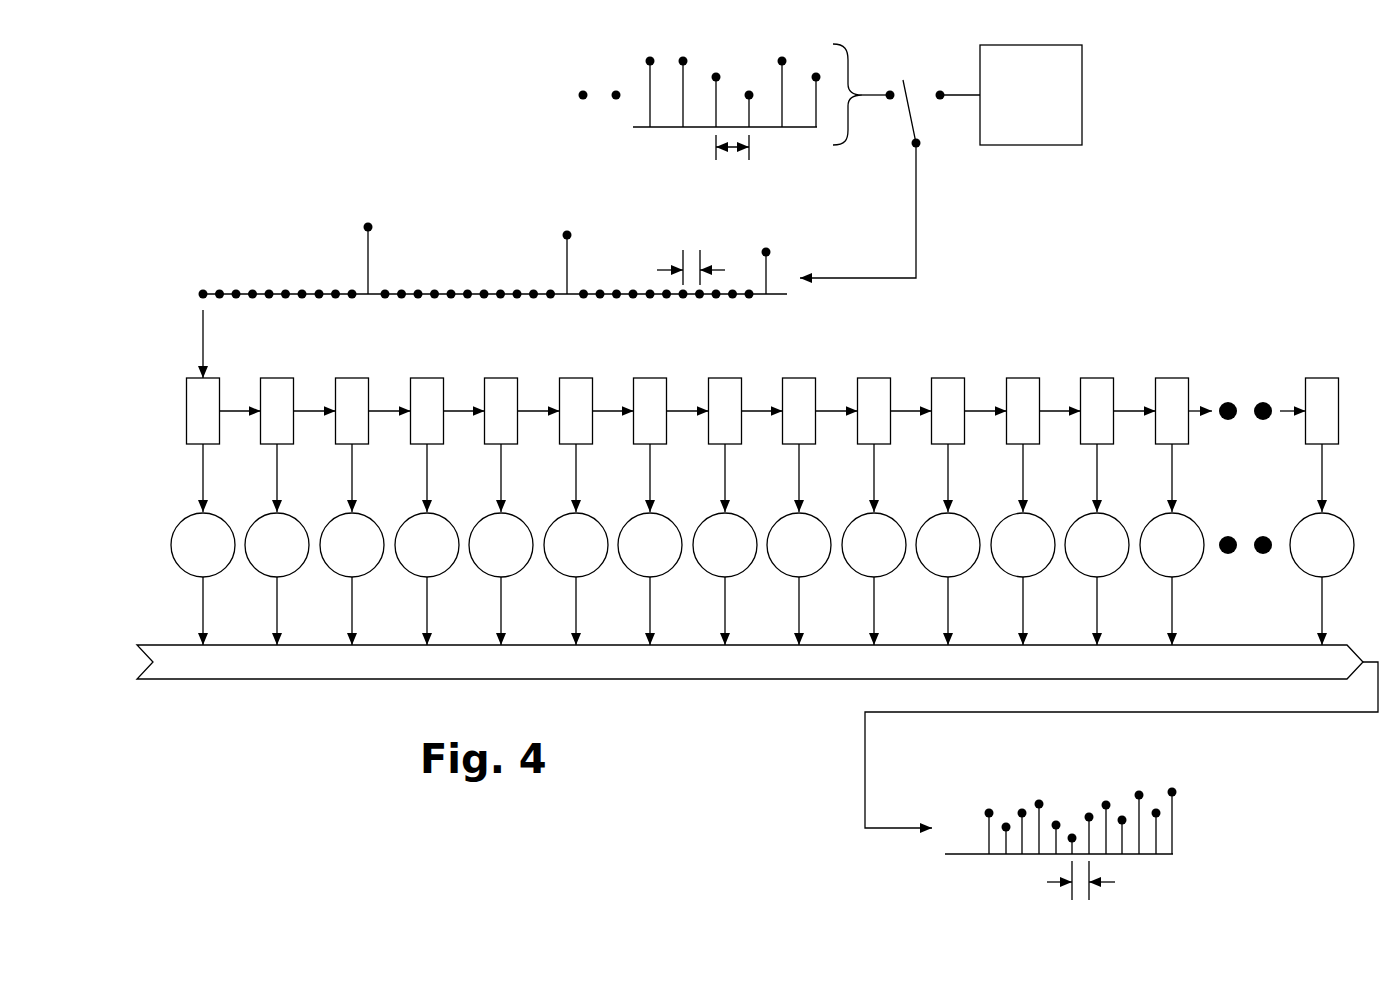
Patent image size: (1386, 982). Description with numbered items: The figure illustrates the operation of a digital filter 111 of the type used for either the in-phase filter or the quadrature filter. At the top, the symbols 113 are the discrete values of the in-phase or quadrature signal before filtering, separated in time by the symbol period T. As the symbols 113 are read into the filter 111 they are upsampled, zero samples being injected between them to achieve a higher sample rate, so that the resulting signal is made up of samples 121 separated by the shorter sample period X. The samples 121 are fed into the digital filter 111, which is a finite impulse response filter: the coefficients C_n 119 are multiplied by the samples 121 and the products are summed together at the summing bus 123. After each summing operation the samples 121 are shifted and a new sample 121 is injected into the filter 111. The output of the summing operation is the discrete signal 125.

The symbols 113 is at (733, 40).
The samples 121 is at (450, 210).
The digital filter 111 is at (1065, 318).
The coefficients C_n 119 is at (221, 510).
The summing bus 123 is at (750, 662).
The discrete signal 125 is at (1200, 828).